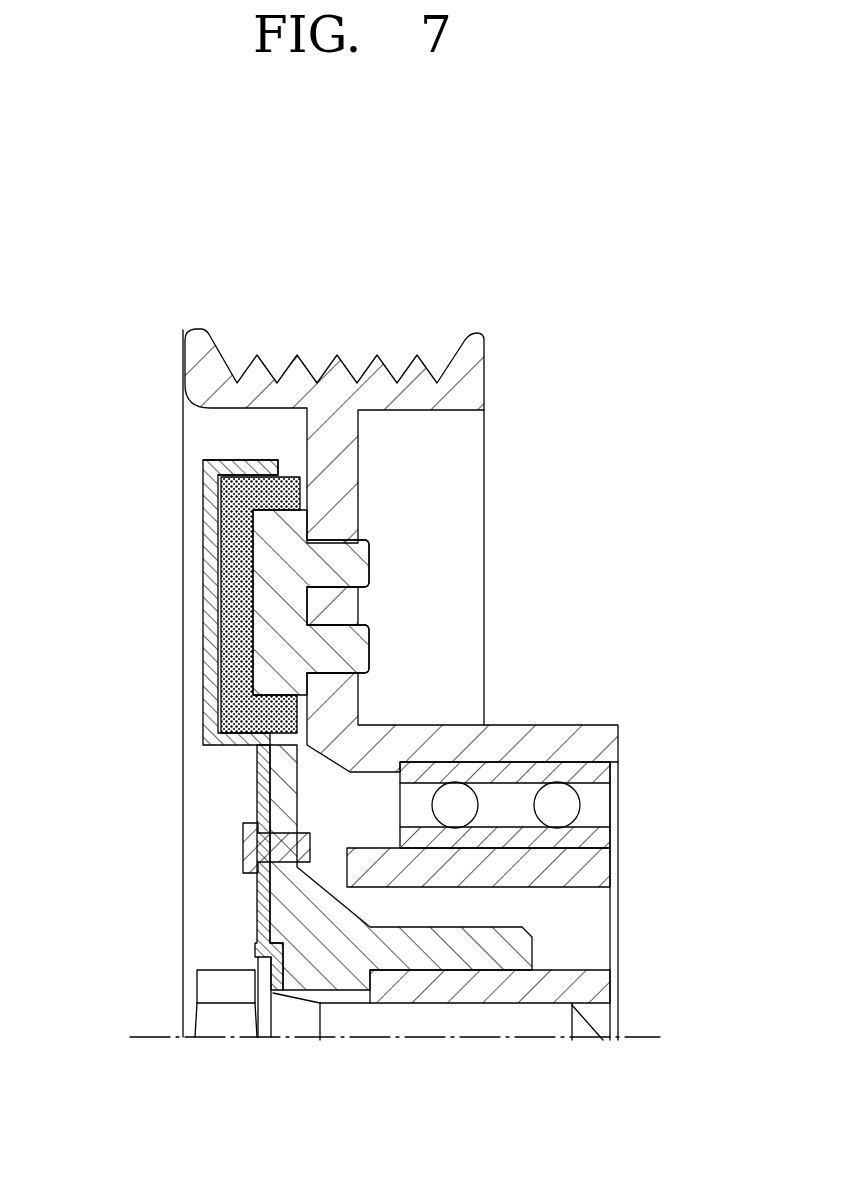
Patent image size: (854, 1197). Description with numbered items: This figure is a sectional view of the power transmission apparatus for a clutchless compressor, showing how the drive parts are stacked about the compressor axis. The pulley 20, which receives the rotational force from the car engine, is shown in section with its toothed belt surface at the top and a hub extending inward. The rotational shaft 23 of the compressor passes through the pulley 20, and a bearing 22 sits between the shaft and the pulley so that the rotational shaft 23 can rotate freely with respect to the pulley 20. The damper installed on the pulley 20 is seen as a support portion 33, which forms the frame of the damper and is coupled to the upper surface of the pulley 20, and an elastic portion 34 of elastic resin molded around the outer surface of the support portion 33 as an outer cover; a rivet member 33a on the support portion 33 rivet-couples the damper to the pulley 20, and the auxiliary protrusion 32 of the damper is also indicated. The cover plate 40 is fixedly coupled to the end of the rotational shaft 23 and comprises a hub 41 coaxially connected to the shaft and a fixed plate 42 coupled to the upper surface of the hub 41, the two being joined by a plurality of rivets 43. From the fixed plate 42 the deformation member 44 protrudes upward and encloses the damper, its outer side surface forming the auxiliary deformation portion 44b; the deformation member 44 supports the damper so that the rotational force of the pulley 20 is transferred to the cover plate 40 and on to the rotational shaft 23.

The pulley 20 is at (334, 380).
The bearing 22 is at (557, 800).
The rotational shaft 23 is at (595, 992).
The auxiliary protrusion 32 is at (289, 477).
The support portion 33 is at (253, 650).
The rivet member 33a is at (372, 648).
The elastic portion 34 is at (221, 613).
The cover plate 40 is at (284, 867).
The hub 41 is at (257, 878).
The fixed plate 42 is at (257, 918).
The rivet 43 is at (243, 848).
The deformation member 44 is at (203, 541).
The auxiliary deformation portion 44b is at (206, 461).